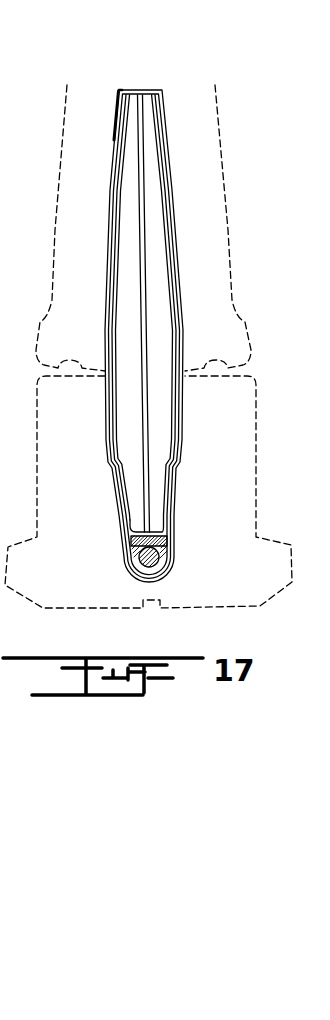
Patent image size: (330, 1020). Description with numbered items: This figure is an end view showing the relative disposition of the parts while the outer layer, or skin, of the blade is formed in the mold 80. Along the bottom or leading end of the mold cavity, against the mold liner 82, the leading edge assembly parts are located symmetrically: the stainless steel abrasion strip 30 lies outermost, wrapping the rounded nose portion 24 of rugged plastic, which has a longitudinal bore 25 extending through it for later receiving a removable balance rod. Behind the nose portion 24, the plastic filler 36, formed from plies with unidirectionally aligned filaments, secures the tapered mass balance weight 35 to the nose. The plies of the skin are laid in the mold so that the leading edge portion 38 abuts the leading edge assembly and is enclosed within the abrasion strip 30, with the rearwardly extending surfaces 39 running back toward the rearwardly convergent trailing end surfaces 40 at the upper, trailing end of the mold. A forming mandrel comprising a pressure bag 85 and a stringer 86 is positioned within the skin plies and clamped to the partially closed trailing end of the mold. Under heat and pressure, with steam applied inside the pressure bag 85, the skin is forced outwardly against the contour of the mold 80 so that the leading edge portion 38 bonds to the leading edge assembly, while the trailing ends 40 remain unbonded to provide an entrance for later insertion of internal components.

The nose portion 24 is at (158, 568).
The longitudinal bore 25 is at (141, 566).
The abrasion strip 30 is at (176, 497).
The mass balance weight 35 is at (135, 542).
The plastic filler 36 is at (168, 543).
The leading edge portion 38 is at (166, 532).
The rearwardly extending surfaces 39 is at (118, 398).
The trailing end surfaces 40 is at (120, 92).
The mold 80 is at (257, 442).
The mold liner 82 is at (109, 258).
The pressure bag 85 is at (120, 221).
The stringer 86 is at (145, 212).